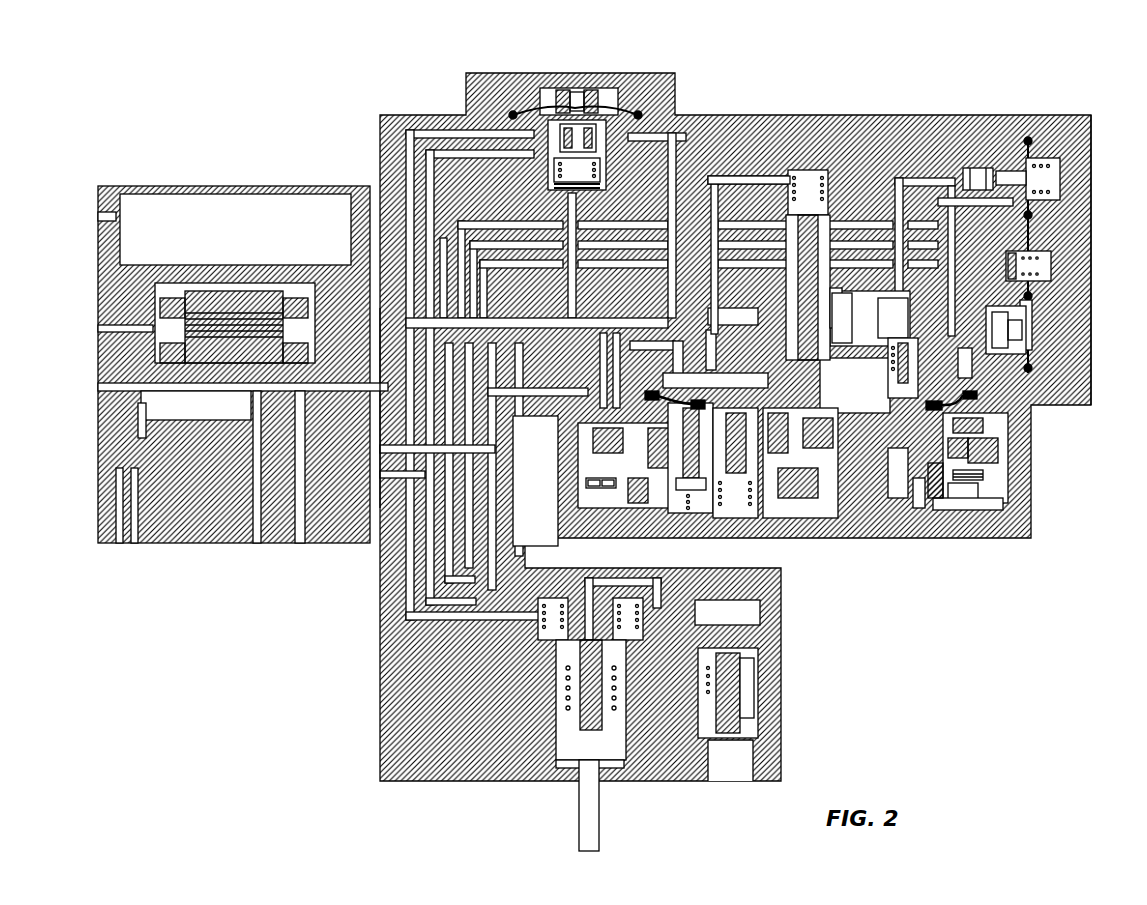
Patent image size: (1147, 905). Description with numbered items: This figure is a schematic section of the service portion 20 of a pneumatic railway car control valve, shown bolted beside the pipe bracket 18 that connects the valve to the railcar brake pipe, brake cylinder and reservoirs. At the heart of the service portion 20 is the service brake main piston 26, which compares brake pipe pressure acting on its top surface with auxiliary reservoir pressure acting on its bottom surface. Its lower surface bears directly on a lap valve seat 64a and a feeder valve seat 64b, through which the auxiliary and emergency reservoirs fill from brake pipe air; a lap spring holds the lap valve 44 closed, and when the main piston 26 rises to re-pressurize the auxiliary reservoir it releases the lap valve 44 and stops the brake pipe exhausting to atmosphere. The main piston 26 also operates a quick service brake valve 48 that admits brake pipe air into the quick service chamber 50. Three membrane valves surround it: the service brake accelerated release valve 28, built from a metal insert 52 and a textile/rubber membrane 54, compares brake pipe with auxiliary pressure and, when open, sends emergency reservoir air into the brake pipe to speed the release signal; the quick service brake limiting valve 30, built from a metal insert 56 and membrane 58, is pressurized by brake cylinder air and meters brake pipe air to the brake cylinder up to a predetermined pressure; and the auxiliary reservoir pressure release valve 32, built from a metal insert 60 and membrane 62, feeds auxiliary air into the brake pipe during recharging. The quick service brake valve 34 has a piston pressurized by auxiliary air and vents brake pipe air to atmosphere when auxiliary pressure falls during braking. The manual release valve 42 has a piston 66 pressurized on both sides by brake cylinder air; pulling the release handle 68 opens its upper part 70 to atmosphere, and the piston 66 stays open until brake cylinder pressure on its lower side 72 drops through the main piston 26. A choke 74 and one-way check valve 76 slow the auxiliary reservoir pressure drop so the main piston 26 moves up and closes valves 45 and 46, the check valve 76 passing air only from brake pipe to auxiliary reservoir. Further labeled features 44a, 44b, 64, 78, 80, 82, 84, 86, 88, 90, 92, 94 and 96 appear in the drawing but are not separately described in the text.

The pipe bracket 18 is at (200, 178).
The service portion 20 is at (380, 775).
The service brake main piston 26 is at (748, 385).
The service brake accelerated release valve 28 is at (523, 175).
The quick service brake limiting valve 30 is at (945, 135).
The auxiliary reservoir pressure release valve 32 is at (960, 345).
The quick service brake valve 34 is at (915, 460).
The manual release valve 42 is at (520, 660).
The lap valve 44 is at (950, 470).
The first valve passage 44a is at (890, 415).
The second valve passage 44b is at (900, 495).
The valve 45 is at (688, 465).
The valve 46 is at (715, 470).
The quick service brake valve 48 is at (856, 340).
The quick service chamber 50 is at (895, 318).
The metal insert 52 is at (570, 82).
The textile/rubber membrane 54 is at (612, 100).
The metal insert 56 is at (1035, 175).
The textile/rubber membrane 58 is at (1030, 135).
The metal insert 60 is at (1030, 330).
The textile/rubber membrane 62 is at (1025, 290).
The piston assembly 64 is at (950, 495).
The lap valve seat 64a is at (912, 500).
The feeder valve seat 64b is at (945, 480).
The piston 66 is at (720, 665).
The release handle 68 is at (580, 800).
The upper part 70 is at (718, 610).
The lower side 72 is at (725, 690).
The choke 74 is at (590, 445).
The one-way check valve 76 is at (708, 322).
The spool 78 is at (845, 310).
The spring 80 is at (828, 280).
The valve 82 is at (820, 505).
The passage 84 is at (930, 440).
The spring 86 is at (857, 398).
The passage 88 is at (925, 500).
The solenoid 90 is at (790, 162).
The valve 92 is at (1040, 255).
The passage 94 is at (378, 400).
The sensor 96 is at (595, 490).